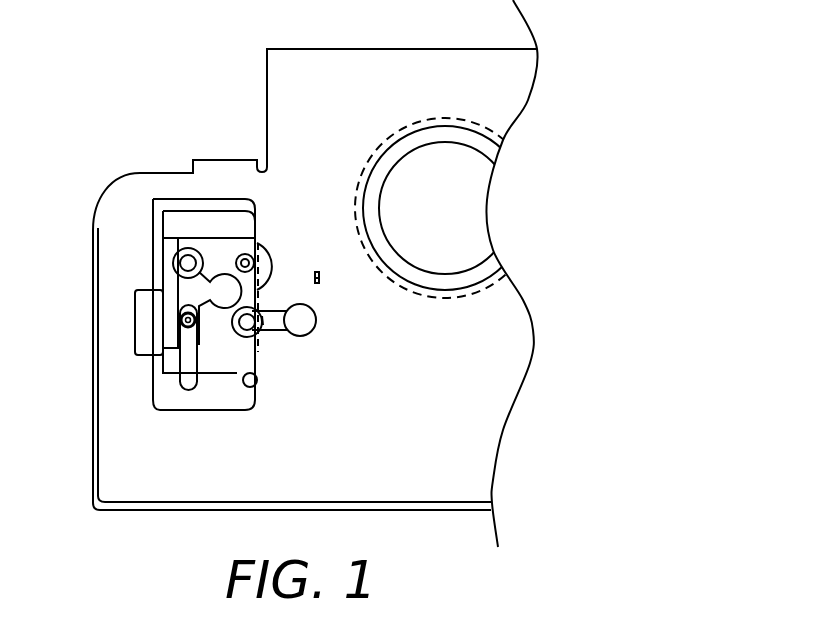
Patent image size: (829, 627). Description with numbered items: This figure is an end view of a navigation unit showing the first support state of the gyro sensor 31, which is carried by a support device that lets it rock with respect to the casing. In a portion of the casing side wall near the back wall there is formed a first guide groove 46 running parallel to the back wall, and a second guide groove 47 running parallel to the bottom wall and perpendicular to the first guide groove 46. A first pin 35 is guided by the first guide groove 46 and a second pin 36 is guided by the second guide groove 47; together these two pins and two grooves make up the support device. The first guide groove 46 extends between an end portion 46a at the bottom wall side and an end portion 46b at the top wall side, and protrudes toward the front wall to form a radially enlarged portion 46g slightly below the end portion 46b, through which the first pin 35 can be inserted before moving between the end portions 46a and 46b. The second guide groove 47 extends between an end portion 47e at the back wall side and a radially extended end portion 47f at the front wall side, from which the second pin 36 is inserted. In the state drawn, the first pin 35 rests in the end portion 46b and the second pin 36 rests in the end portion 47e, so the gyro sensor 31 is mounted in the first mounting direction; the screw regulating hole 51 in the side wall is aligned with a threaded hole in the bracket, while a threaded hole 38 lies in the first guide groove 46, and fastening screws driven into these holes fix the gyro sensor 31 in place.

The gyro sensor 31 is at (283, 183).
The first pin 35 is at (175, 265).
The second pin 36 is at (264, 292).
The threaded hole 38 is at (187, 330).
The first guide groove 46 is at (178, 295).
The end portion 46a is at (187, 395).
The end portion 46b is at (178, 257).
The radially enlarged portion 46g is at (217, 271).
The second guide groove 47 is at (270, 340).
The end portion 47e is at (233, 335).
The radially extended end portion 47f is at (318, 326).
The screw regulating hole 51 is at (242, 256).